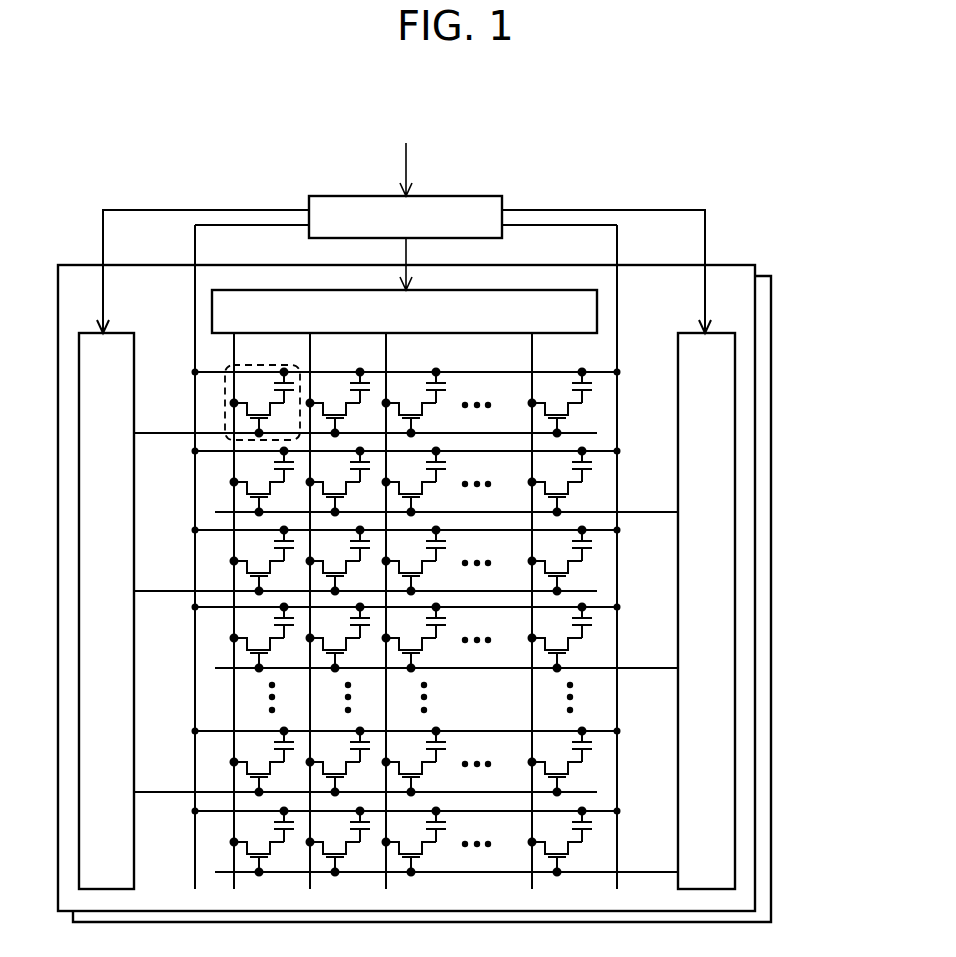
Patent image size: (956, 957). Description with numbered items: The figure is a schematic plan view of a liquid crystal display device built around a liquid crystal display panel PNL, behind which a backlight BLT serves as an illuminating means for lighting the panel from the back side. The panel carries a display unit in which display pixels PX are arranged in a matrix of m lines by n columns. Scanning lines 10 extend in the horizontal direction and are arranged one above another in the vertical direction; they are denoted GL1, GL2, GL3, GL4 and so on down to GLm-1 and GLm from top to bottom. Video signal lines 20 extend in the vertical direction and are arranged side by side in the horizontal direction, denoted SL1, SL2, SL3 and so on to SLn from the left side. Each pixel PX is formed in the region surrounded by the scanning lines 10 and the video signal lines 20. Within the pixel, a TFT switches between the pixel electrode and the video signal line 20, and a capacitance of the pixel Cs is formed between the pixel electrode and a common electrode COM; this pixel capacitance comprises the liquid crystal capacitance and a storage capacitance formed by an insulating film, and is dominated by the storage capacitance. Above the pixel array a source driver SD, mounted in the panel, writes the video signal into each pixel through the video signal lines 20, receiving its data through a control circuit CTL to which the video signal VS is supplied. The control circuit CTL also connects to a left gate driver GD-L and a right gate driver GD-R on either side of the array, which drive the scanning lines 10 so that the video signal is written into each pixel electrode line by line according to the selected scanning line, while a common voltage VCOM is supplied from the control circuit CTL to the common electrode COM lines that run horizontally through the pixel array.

The scanning line 10 is at (195, 450).
The video signal line 20 is at (233, 344).
The display pixel PX is at (225, 395).
The element TFT is at (348, 497).
The capacitance of the pixel Cs is at (343, 465).
The common electrode COM is at (263, 608).
The scanning line GL1 is at (365, 419).
The scanning line GL2 is at (446, 497).
The scanning line GL3 is at (365, 577).
The scanning line GL4 is at (446, 654).
The scanning line GLm-1 is at (365, 780).
The scanning line GLm is at (447, 857).
The video signal line SL1 is at (260, 611).
The video signal line SL2 is at (334, 611).
The video signal line SL3 is at (409, 611).
The video signal line SLn is at (555, 611).
The left gate driver GD-L is at (194, 549).
The right gate driver GD-R is at (618, 549).
The source driver SD is at (404, 285).
The control circuit CTL is at (405, 217).
The video signal VS is at (401, 154).
The common voltage VCOM is at (406, 239).
The backlight BLT is at (775, 662).
The liquid crystal display panel PNL is at (760, 717).